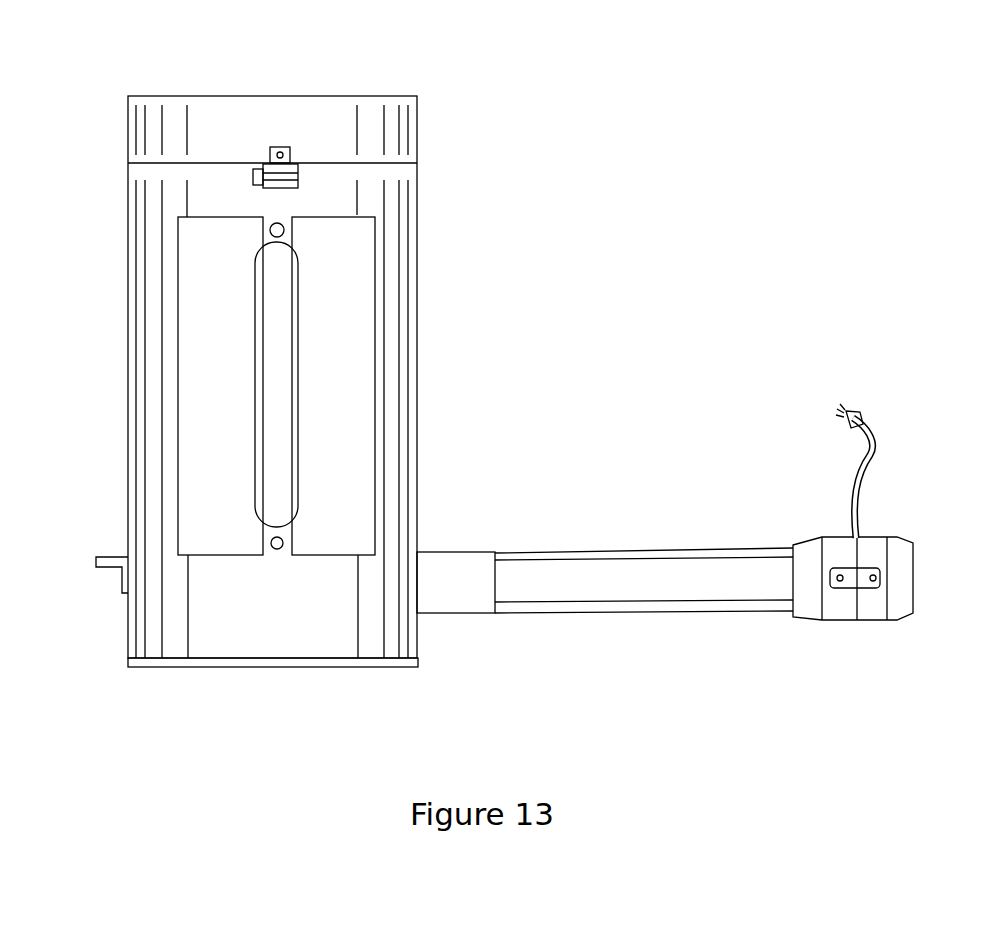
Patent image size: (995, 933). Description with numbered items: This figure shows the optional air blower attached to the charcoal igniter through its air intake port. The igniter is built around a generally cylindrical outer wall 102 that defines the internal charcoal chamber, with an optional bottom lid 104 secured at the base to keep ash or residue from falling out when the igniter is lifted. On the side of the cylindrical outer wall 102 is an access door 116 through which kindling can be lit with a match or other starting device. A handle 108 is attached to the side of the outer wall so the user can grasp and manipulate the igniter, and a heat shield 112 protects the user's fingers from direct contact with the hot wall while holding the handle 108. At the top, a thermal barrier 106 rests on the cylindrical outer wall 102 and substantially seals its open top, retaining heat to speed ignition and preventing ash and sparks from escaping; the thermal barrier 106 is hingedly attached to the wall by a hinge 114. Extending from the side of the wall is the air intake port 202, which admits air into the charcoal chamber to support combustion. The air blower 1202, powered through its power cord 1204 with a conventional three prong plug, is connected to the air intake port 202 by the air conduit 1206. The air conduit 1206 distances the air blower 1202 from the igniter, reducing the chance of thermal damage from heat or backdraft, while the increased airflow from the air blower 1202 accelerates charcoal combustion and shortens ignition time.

The cylindrical outer wall 102 is at (137, 397).
The bottom lid 104 is at (325, 667).
The thermal barrier 106 is at (228, 113).
The handle 108 is at (273, 377).
The heat shield 112 is at (205, 538).
The hinge 114 is at (282, 150).
The access door 116 is at (93, 557).
The air intake port 202 is at (435, 570).
The air blower 1202 is at (870, 610).
The power cord 1204 is at (850, 480).
The air conduit 1206 is at (665, 585).